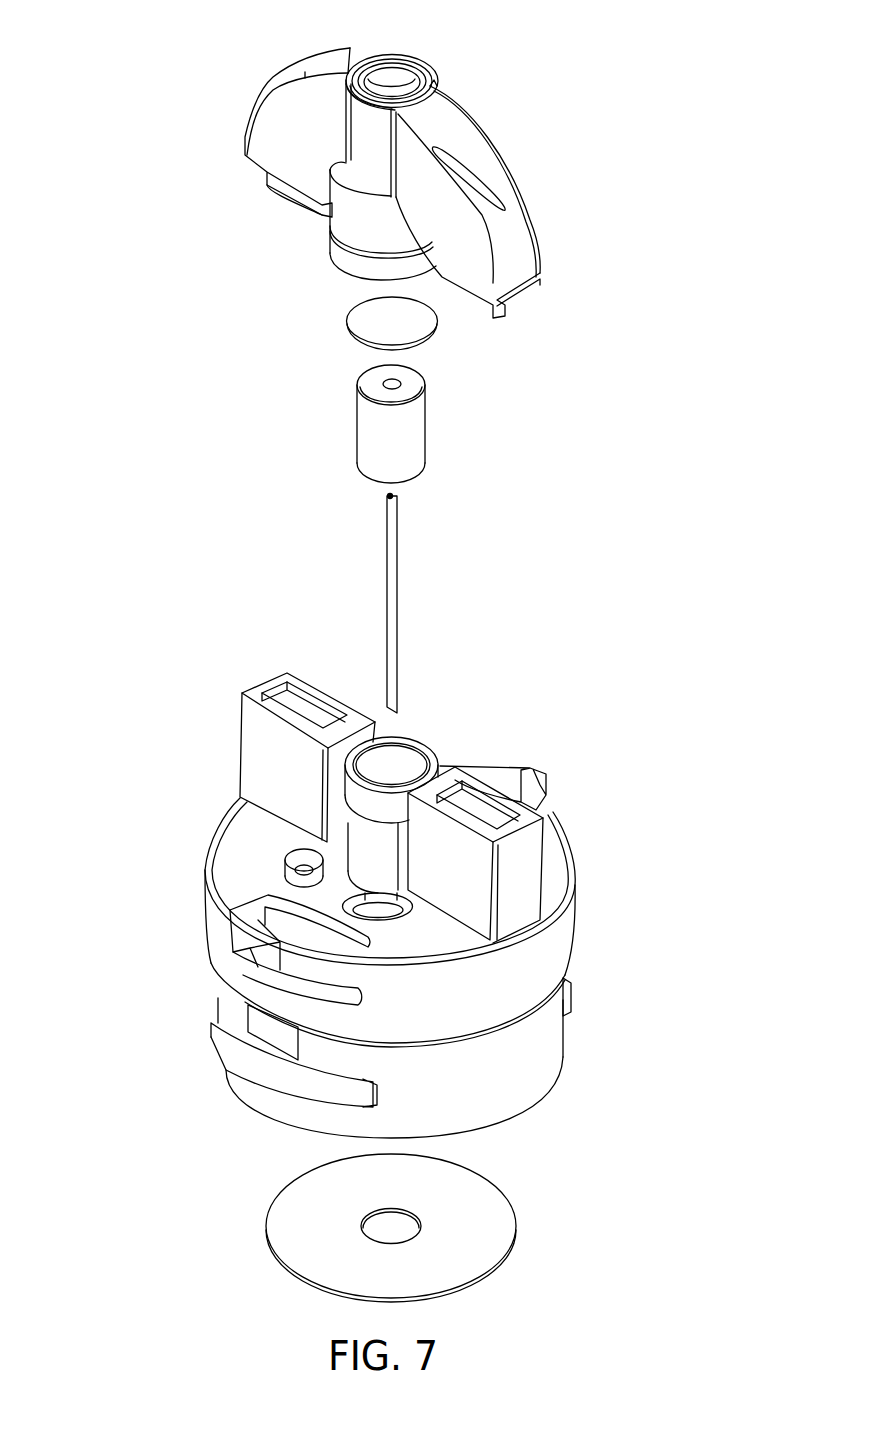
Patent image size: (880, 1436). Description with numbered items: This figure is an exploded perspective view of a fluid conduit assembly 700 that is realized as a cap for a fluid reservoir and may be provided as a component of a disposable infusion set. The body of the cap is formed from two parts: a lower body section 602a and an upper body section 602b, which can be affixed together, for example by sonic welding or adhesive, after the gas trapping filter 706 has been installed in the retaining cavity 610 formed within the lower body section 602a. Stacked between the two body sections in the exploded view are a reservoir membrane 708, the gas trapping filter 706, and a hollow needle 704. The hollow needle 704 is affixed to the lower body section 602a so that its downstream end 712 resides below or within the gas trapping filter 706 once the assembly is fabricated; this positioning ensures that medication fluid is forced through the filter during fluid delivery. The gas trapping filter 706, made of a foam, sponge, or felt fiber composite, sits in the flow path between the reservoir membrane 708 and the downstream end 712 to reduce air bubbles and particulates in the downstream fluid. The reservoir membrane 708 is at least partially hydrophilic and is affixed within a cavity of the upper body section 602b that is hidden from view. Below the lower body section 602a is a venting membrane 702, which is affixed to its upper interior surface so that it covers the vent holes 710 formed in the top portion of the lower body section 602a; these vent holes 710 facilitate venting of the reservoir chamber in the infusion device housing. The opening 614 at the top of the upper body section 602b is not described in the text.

The fluid conduit assembly 700 is at (140, 35).
The upper body section 602b is at (489, 135).
The opening in cap 614 is at (393, 91).
The reservoir membrane 708 is at (346, 323).
The gas trapping filter 706 is at (425, 427).
The downstream end 712 is at (394, 496).
The hollow needle 704 is at (387, 588).
The lower body section 602a is at (576, 889).
The retaining cavity 610 is at (402, 763).
The vent holes 710 is at (304, 865).
The venting membrane 702 is at (515, 1218).